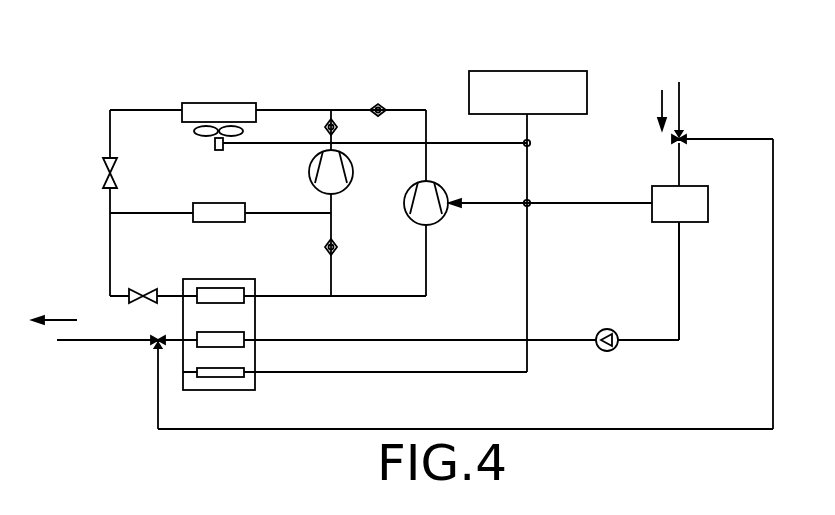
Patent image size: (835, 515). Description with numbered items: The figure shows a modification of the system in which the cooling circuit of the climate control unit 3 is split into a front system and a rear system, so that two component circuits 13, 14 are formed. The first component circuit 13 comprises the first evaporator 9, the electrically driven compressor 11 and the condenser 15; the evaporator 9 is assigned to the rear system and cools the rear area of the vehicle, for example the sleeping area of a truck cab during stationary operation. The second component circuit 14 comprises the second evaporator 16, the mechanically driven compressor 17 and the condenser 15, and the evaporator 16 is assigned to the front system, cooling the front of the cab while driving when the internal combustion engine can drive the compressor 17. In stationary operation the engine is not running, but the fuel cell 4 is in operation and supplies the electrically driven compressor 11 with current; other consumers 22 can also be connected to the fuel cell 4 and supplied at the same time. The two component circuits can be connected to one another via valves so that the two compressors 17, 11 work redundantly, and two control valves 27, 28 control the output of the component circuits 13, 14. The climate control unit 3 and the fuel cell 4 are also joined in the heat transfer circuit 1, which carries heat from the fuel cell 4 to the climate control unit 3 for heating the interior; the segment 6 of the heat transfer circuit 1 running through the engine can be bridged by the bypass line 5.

The heat transfer circuit 1 is at (680, 292).
The climate control unit 3 is at (243, 279).
The PEM fuel cell 4 is at (709, 198).
The bypass line 5 is at (620, 429).
The segment of the heat transfer circuit 6 is at (108, 340).
The first evaporator 9 is at (208, 288).
The electrically driven compressor 11 is at (445, 213).
The first component circuit 13 is at (452, 268).
The second component circuit 14 is at (178, 174).
The condenser 15 is at (219, 103).
The second evaporator 16 is at (222, 203).
The mechanically driven compressor 17 is at (350, 185).
The other consumers 22 is at (530, 71).
The control valve 27 is at (104, 172).
The control valve 28 is at (148, 290).